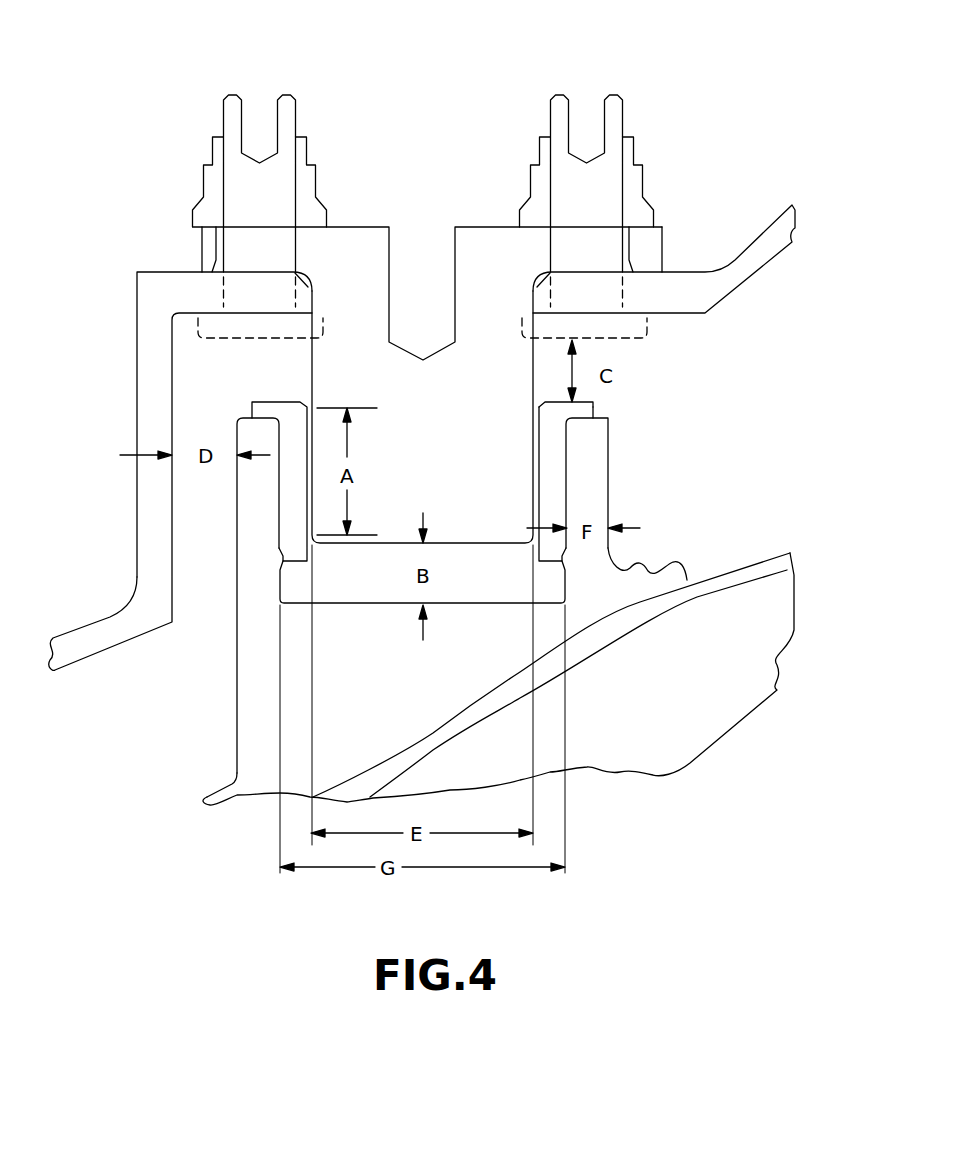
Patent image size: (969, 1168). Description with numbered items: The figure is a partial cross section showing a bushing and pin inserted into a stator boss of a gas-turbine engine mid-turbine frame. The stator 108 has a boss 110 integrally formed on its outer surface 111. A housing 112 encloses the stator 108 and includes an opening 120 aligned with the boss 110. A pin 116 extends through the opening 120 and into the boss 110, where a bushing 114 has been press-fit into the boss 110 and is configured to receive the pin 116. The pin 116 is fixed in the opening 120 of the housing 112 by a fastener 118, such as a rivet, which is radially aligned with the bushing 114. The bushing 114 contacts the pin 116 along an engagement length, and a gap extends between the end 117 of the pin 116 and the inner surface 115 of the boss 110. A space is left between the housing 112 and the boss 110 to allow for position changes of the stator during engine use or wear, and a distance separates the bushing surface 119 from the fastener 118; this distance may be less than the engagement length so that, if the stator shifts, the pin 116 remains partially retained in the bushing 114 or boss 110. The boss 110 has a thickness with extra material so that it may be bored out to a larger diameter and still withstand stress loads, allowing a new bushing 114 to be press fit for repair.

The stator 108 is at (773, 572).
The boss 110 is at (593, 500).
The outer surface 111 is at (640, 602).
The housing 112 is at (152, 384).
The bushing 114 is at (555, 477).
The inner surface 115 is at (470, 603).
The pin 116 is at (363, 250).
The end 117 is at (338, 545).
The fastener 118 is at (599, 183).
The bushing surface 119 is at (583, 400).
The opening 120 is at (533, 292).